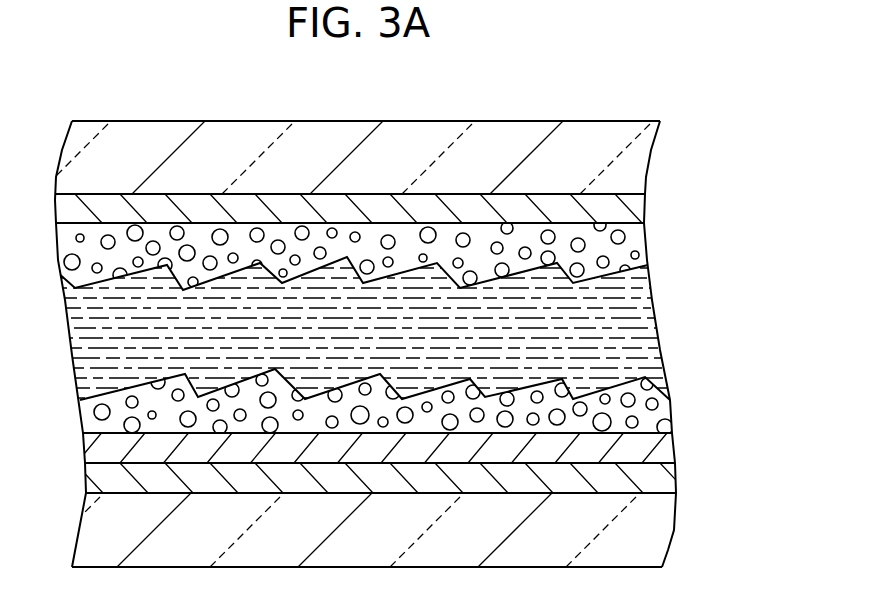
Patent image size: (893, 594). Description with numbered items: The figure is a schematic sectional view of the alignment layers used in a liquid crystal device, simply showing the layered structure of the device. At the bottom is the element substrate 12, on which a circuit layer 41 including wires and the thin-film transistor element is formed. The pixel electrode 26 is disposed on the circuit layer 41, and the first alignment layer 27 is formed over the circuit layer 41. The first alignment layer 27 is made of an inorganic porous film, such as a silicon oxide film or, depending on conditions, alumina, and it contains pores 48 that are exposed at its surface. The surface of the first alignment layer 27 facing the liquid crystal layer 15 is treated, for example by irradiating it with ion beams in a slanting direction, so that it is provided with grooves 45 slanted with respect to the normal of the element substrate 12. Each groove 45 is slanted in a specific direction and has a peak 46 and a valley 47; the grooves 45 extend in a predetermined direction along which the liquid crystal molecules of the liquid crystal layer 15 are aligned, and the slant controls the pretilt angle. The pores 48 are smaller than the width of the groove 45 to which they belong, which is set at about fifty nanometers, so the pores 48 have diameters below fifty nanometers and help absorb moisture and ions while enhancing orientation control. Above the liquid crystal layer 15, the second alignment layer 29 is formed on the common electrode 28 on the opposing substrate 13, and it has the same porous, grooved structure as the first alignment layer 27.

The element substrate 12 is at (662, 530).
The opposing substrate 13 is at (635, 155).
The liquid crystal layer 15 is at (633, 333).
The pixel electrode 26 is at (660, 447).
The first alignment layer 27 is at (660, 412).
The common electrode 28 is at (635, 207).
The second alignment layer 29 is at (635, 242).
The circuit layer 41 is at (660, 478).
The groove 45 is at (522, 277).
The peak 46 is at (273, 373).
The valley 47 is at (198, 397).
The pores 48 is at (525, 252).